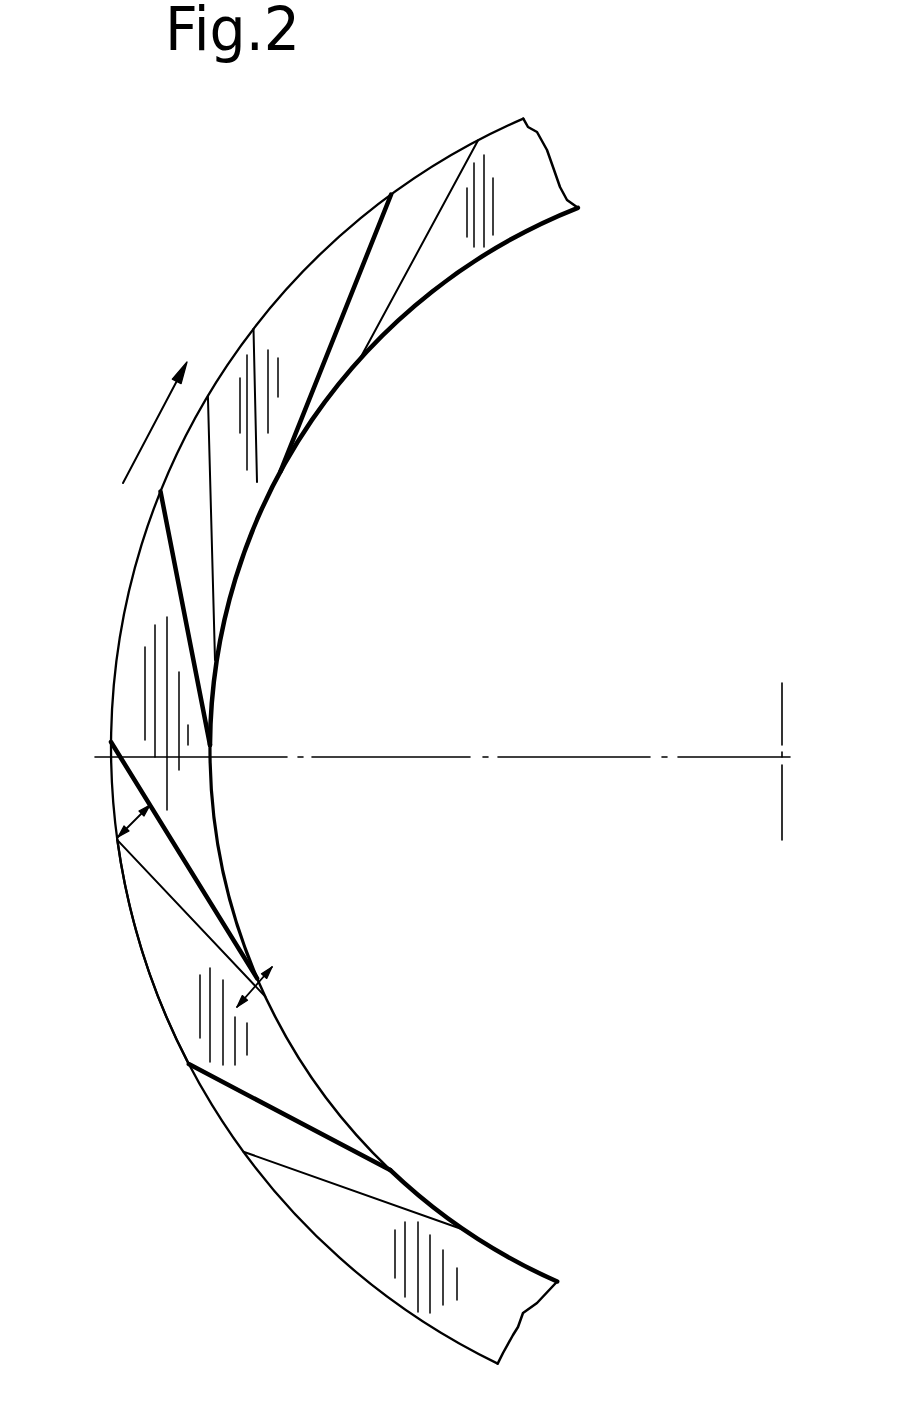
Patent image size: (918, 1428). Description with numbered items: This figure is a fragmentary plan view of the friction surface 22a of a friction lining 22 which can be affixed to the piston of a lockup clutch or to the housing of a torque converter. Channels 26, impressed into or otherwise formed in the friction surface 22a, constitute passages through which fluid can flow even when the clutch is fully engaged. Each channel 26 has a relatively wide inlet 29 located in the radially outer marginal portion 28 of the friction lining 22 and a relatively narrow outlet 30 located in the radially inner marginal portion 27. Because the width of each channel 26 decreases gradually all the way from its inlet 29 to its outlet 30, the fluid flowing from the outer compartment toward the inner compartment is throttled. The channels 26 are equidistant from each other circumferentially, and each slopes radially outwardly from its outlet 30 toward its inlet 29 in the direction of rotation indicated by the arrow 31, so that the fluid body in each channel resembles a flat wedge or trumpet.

The friction lining 22 is at (190, 803).
The friction surface 22a is at (427, 1253).
The channels 26 is at (330, 388).
The radially inner marginal portion 27 is at (337, 1110).
The radially outer marginal portion 28 is at (156, 991).
The inlets 29 is at (147, 803).
The outlets 30 is at (250, 993).
The arrow 31 is at (132, 458).